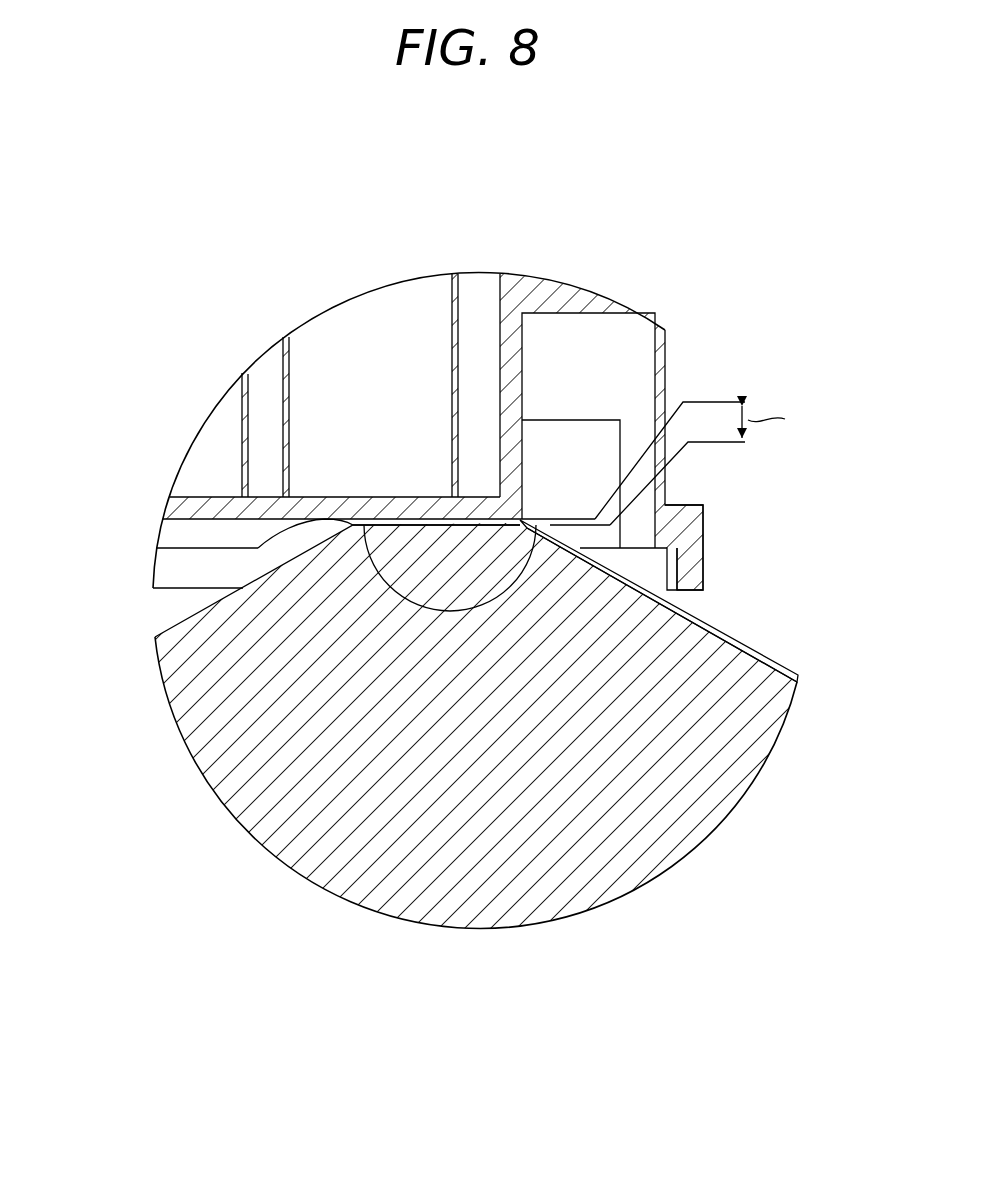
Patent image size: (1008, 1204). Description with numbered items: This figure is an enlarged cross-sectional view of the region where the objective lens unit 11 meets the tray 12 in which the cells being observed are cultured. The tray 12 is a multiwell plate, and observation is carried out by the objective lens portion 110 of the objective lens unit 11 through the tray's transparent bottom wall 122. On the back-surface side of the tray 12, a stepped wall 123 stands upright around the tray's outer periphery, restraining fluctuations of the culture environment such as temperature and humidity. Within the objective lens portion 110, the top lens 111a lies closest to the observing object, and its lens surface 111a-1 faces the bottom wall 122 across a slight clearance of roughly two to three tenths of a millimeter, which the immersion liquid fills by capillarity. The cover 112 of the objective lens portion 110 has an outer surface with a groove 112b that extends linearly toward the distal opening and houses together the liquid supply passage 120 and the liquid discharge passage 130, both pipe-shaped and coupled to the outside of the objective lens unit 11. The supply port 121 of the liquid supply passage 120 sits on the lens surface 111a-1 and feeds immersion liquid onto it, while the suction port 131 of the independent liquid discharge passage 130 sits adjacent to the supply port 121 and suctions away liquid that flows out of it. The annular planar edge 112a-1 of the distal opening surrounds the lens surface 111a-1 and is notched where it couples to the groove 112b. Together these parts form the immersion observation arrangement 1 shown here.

The connection structure 1 is at (394, 143).
The objective lens unit 11 is at (461, 787).
The objective lens portion 110 is at (220, 822).
The top lens 111a is at (433, 573).
The lens surface 111a-1 is at (407, 523).
The cover 112 is at (423, 600).
The edge 112a-1 is at (240, 560).
The groove 112b is at (708, 613).
The tray 12 is at (599, 279).
The liquid supply passage 120 is at (700, 601).
The liquid discharge passage 130 is at (768, 658).
The supply port 121 is at (452, 357).
The bottom wall 122 is at (240, 516).
The stepped wall 123 is at (703, 523).
The suction port 131 is at (533, 548).